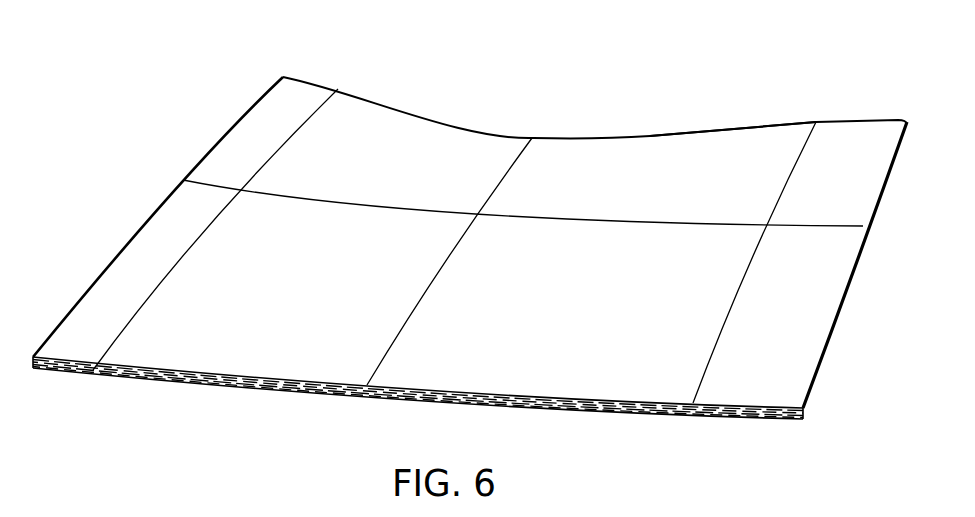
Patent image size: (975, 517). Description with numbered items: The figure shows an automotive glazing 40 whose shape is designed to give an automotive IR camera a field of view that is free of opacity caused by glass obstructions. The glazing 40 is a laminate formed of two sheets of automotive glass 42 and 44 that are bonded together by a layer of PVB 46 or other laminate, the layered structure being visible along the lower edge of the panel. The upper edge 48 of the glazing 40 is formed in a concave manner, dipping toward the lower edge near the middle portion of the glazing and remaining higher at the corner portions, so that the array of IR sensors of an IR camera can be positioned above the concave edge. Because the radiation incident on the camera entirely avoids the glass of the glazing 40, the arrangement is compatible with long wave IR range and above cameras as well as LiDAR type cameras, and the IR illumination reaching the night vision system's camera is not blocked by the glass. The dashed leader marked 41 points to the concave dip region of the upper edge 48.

The glazing 40 is at (207, 134).
The depression / contoured region 41 is at (532, 130).
The sheet of automotive glass 42 is at (128, 283).
The sheet of automotive glass 44 is at (93, 372).
The layer of PVB 46 is at (42, 370).
The upper edge 48 is at (670, 134).